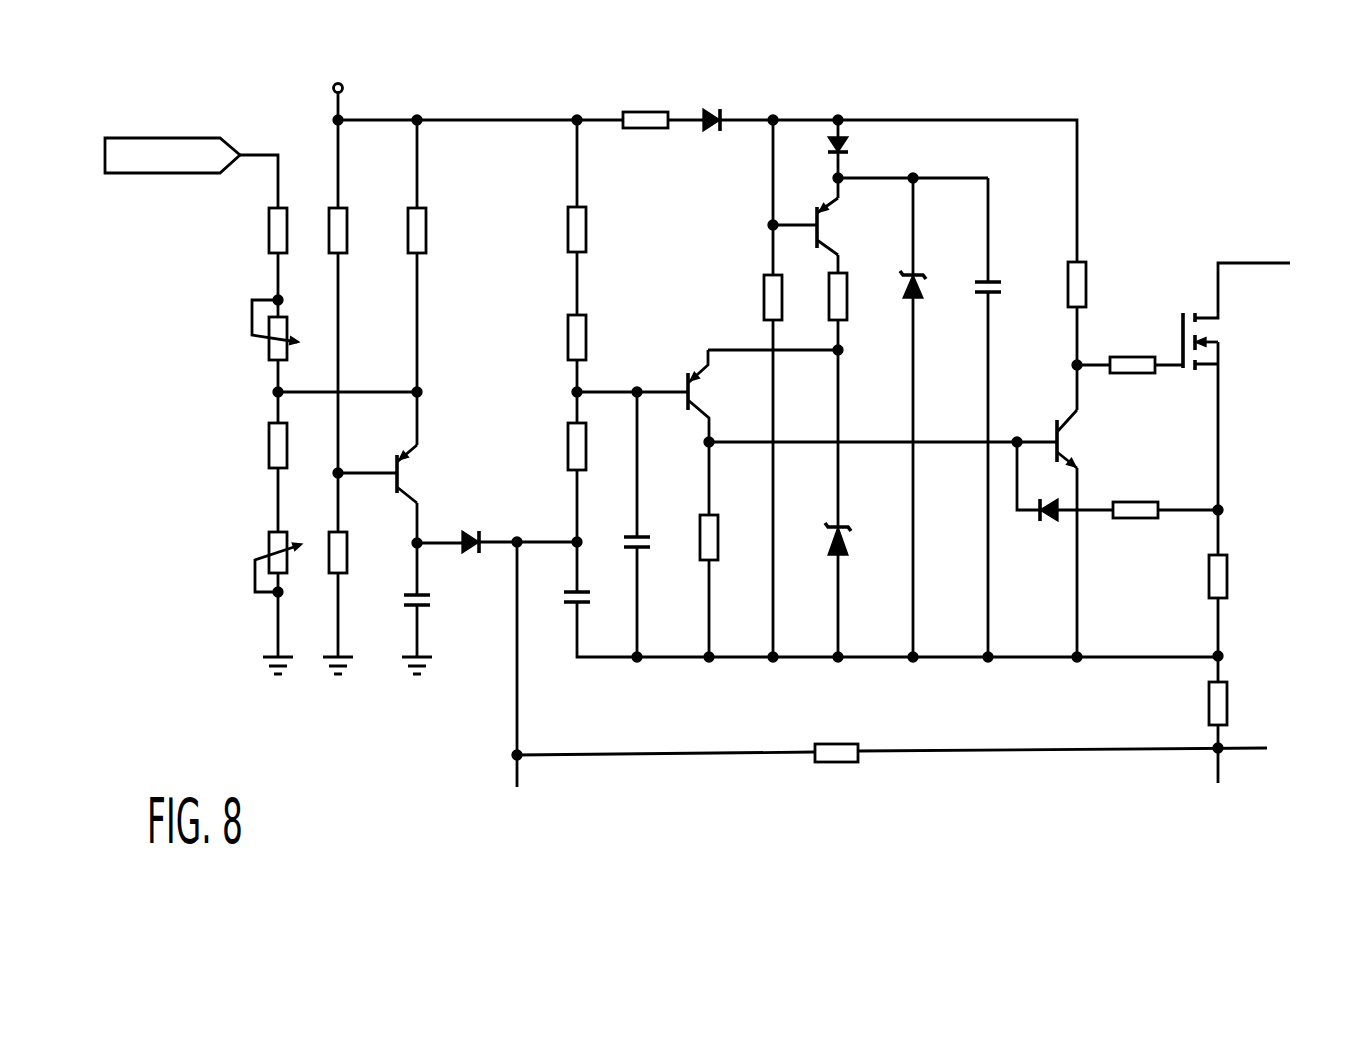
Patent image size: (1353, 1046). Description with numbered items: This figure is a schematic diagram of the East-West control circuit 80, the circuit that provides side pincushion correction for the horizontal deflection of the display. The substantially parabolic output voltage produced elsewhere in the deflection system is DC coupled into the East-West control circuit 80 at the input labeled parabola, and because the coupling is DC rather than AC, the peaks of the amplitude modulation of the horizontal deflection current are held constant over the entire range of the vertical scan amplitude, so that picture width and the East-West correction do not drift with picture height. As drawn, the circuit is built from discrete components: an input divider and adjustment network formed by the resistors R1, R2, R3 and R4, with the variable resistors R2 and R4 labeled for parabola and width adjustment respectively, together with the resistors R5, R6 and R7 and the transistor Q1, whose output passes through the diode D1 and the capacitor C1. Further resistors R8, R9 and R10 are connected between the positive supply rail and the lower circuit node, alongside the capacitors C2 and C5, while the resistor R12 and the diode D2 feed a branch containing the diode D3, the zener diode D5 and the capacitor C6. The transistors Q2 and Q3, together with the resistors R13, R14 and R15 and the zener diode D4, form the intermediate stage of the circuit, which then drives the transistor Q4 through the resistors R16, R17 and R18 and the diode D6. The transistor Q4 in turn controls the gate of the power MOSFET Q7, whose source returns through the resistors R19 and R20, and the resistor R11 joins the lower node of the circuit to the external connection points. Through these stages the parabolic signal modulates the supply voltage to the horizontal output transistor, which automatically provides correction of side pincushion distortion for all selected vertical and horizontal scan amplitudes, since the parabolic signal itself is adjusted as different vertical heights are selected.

The East-West control circuit 80 is at (728, 445).
The resistor R1 10K R1 is at (261, 231).
The potentiometer R2 47K parabola R2 is at (235, 324).
The resistor R3 8.2K R3 is at (260, 446).
The potentiometer R4 22K width R4 is at (251, 577).
The resistor R5 120K R5 is at (318, 231).
The resistor R6 11K R6 is at (356, 554).
The resistor R7 88K 0.5W R7 is at (396, 226).
The resistor R8 68K 1W R8 is at (560, 226).
The resistor R9 68K 1W R9 is at (560, 340).
The resistor R10 560 R10 is at (560, 448).
The resistor R11 3.9K R11 is at (836, 722).
The resistor R12 10K 4W R12 is at (645, 163).
The resistor R13 1K R13 is at (726, 540).
The resistor R14 10K R14 is at (758, 296).
The resistor R15 2.2K R15 is at (820, 299).
The resistor R16 4.7K R16 is at (1096, 275).
The resistor R17 33 R17 is at (1132, 337).
The resistor R18 100 R18 is at (1135, 541).
The resistor R19 0.39 R19 is at (1199, 579).
The resistor R20 1 R20 is at (1201, 704).
The capacitor C1 1n C1 is at (406, 616).
The capacitor C2 100n C2 is at (598, 603).
The capacitor C5 220n C5 is at (658, 546).
The capacitor C6 47u C6 is at (1004, 289).
The diode D1 BY584 D1 is at (469, 571).
The diode D2 BY584 D2 is at (711, 148).
The diode D3 1N4148 D3 is at (868, 147).
The zener diode D4 5.1V D4 is at (857, 542).
The zener diode D5 18V D5 is at (928, 289).
The diode D6 1N4148 D6 is at (1045, 539).
The transistor Q1 BC557 Q1 is at (430, 468).
The transistor Q2 BC557 Q2 is at (720, 396).
The transistor Q3 BC557 Q3 is at (847, 221).
The transistor Q4 BC337 Q4 is at (1087, 434).
The MOSFET Q7 BUZ90 Q7 is at (1228, 341).